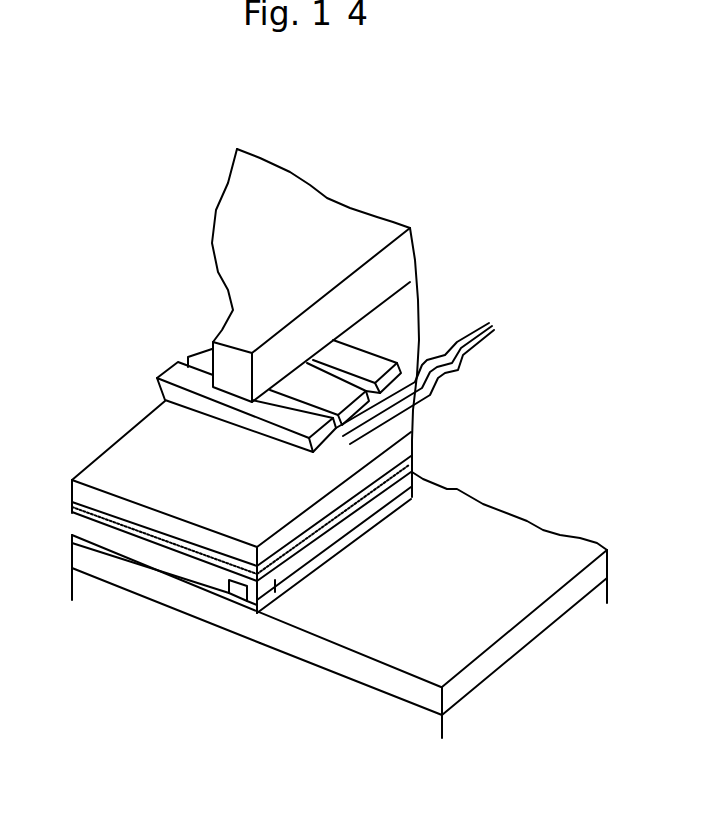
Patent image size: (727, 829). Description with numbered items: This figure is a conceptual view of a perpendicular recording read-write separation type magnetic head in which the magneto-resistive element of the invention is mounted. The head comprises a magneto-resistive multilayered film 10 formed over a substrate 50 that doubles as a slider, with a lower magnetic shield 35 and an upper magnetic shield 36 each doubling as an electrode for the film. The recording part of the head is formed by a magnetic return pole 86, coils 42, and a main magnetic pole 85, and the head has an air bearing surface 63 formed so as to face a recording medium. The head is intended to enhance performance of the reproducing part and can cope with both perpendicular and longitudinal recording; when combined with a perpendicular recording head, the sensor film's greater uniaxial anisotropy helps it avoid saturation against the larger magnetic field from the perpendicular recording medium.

The main magnetic pole 85 is at (232, 372).
The coils 42 is at (342, 387).
The magnetic return pole 86 is at (107, 505).
The upper magnetic shield 36 is at (72, 502).
The magneto-resistive multilayered film 10 is at (247, 593).
The lower magnetic shield 35 is at (97, 566).
The substrate 50 is at (100, 605).
The air bearing surface 63 is at (370, 695).